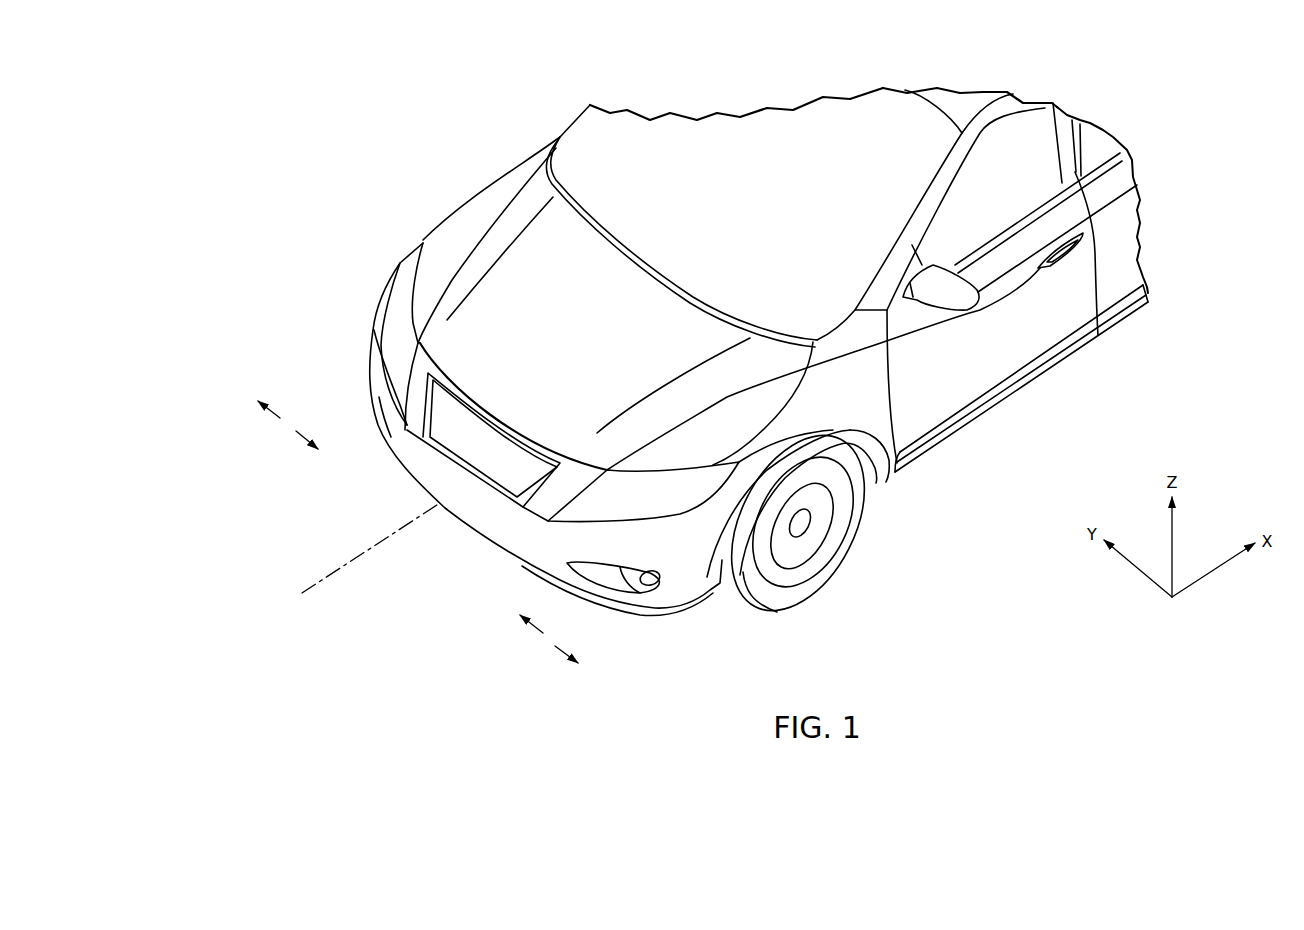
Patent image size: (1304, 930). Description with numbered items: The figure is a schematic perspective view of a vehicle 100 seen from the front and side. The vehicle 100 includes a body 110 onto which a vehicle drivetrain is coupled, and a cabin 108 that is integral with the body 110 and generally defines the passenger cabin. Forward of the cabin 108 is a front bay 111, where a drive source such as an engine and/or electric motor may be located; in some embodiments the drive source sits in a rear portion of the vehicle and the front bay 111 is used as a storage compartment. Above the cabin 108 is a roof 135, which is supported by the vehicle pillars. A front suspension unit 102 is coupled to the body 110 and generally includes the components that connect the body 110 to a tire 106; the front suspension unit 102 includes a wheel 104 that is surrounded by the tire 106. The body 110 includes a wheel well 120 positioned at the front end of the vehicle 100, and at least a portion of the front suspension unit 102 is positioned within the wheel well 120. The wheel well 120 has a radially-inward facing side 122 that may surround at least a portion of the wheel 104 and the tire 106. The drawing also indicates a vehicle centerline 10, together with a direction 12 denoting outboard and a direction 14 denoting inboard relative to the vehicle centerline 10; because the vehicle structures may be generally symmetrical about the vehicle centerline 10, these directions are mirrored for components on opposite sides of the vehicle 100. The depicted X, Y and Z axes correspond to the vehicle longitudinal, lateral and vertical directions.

The vehicle centerline 10 is at (318, 580).
The direction 12 is at (268, 413).
The direction 14 is at (299, 441).
The vehicle 100 is at (727, 356).
The front suspension unit 102 is at (362, 291).
The wheel 104 is at (846, 543).
The tire 106 is at (740, 597).
The cabin 108 is at (584, 95).
The body 110 is at (489, 162).
The front bay 111 is at (611, 299).
The wheel well 120 is at (877, 465).
The radially-inward facing side 122 is at (861, 448).
The roof 135 is at (958, 102).